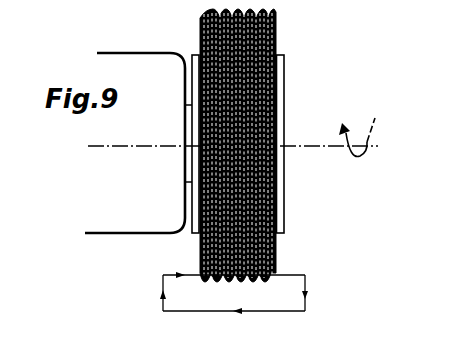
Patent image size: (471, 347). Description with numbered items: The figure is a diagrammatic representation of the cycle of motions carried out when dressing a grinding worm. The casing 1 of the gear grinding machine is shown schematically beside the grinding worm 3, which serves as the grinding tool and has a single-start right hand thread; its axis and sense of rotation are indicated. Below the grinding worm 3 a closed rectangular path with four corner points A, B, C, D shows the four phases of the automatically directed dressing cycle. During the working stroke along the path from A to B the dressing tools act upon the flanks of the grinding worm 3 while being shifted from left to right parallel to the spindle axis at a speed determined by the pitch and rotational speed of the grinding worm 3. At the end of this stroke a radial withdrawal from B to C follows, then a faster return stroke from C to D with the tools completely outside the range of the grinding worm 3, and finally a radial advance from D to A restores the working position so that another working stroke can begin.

The casing 1 is at (134, 60).
The grinding worm 3 is at (273, 53).
The start point of working stroke A is at (226, 273).
The end point of working stroke B is at (310, 285).
The start point of return stroke C is at (241, 317).
The end point of return stroke D is at (156, 301).